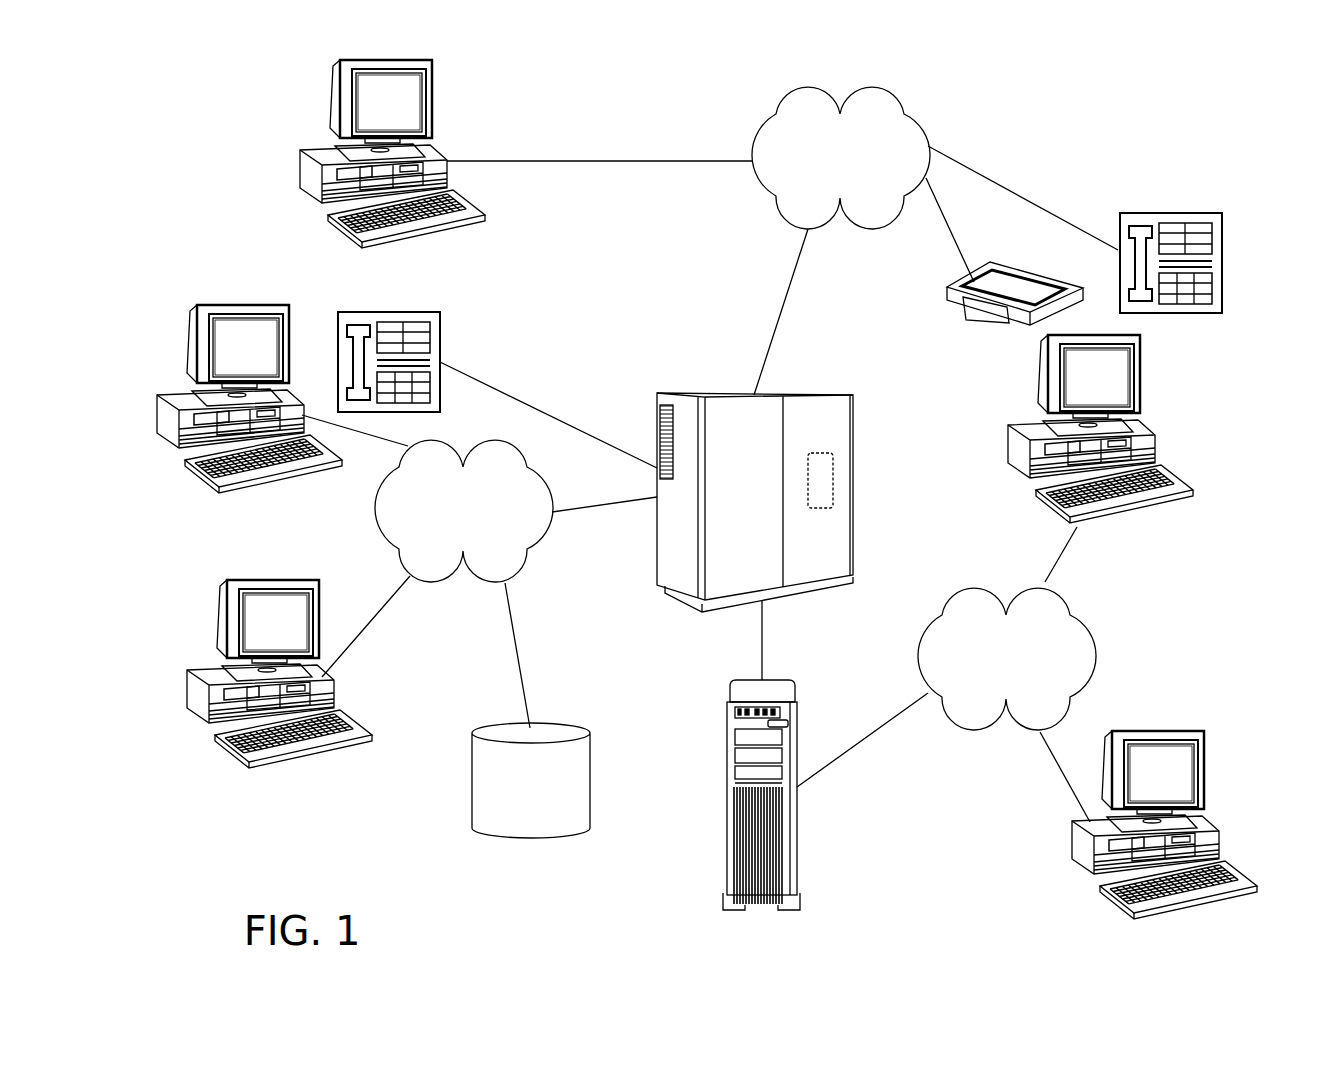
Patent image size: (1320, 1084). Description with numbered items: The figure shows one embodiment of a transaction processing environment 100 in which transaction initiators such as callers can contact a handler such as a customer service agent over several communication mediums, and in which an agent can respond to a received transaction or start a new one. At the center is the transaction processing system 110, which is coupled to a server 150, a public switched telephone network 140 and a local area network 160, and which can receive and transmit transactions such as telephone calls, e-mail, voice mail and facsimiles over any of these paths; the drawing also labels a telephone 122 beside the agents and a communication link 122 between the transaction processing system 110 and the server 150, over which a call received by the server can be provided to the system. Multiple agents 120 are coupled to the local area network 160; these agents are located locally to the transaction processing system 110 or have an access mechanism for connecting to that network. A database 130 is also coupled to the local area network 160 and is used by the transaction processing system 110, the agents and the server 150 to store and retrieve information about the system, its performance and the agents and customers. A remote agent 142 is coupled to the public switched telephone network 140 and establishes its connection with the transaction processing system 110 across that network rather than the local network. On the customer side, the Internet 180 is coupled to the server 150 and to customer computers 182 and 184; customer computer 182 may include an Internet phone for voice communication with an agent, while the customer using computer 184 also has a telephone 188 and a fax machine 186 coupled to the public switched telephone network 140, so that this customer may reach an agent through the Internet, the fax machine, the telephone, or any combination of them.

The transaction processing environment 100 is at (245, 256).
The agent 142 is at (428, 165).
The telephone / communication link 122 is at (762, 656).
The transaction processing system 110 is at (700, 460).
The agents 120 is at (264, 558).
The local area network 160 is at (464, 511).
The database 130 is at (531, 780).
The server 150 is at (800, 795).
The public switched telephone network 140 is at (841, 158).
The fax machine 186 is at (990, 331).
The telephone 188 is at (1167, 241).
The customer computer 184 is at (1111, 469).
The Internet 180 is at (1007, 659).
The customer computer 182 is at (1105, 825).